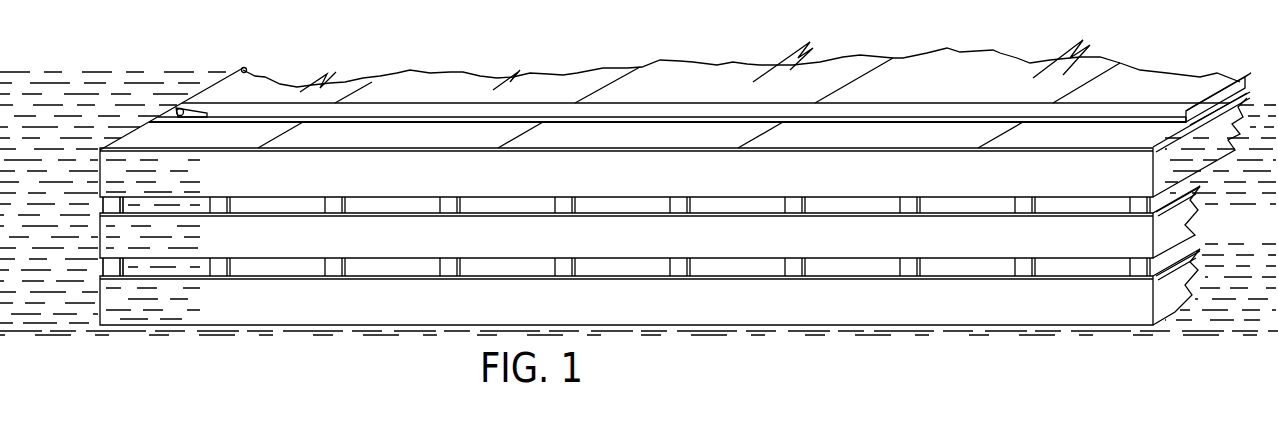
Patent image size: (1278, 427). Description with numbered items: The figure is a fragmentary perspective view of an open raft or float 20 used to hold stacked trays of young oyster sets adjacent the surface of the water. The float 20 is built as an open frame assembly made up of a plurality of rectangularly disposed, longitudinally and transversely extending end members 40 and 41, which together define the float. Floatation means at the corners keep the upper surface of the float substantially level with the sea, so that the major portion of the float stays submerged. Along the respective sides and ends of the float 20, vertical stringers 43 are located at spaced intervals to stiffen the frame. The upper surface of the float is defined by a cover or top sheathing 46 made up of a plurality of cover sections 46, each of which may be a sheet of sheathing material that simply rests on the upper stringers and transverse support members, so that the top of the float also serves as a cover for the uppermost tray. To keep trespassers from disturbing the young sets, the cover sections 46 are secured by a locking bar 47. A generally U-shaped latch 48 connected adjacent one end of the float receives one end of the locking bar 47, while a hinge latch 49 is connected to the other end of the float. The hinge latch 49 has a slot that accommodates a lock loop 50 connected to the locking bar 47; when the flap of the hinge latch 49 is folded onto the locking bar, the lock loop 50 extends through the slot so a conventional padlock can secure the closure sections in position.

The raft or float 20 is at (1021, 337).
The end member 40 is at (1010, 192).
The end member 41 is at (1187, 220).
The vertical stringer 43 is at (679, 267).
The cover or top sheathing section 46 is at (249, 83).
The locking bar 47 is at (647, 105).
The U-shaped latch 48 is at (1215, 90).
The hinge latch 49 is at (173, 110).
The lock loop 50 is at (178, 108).